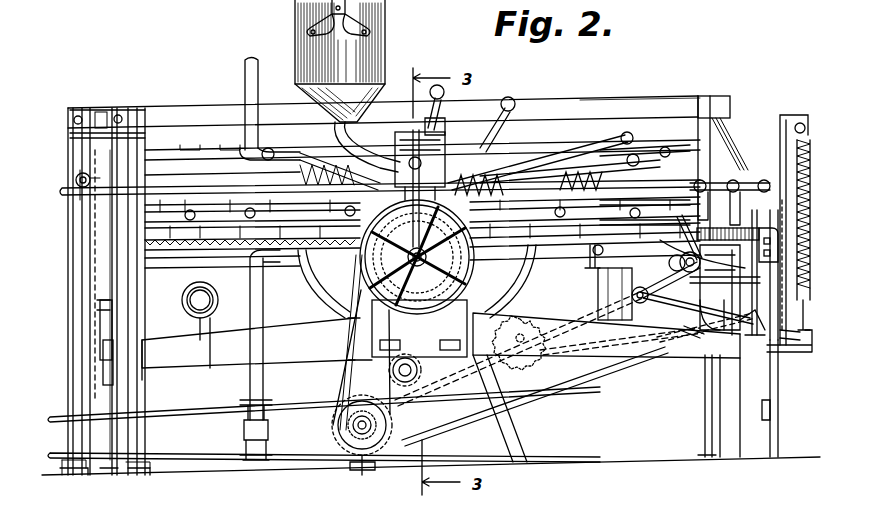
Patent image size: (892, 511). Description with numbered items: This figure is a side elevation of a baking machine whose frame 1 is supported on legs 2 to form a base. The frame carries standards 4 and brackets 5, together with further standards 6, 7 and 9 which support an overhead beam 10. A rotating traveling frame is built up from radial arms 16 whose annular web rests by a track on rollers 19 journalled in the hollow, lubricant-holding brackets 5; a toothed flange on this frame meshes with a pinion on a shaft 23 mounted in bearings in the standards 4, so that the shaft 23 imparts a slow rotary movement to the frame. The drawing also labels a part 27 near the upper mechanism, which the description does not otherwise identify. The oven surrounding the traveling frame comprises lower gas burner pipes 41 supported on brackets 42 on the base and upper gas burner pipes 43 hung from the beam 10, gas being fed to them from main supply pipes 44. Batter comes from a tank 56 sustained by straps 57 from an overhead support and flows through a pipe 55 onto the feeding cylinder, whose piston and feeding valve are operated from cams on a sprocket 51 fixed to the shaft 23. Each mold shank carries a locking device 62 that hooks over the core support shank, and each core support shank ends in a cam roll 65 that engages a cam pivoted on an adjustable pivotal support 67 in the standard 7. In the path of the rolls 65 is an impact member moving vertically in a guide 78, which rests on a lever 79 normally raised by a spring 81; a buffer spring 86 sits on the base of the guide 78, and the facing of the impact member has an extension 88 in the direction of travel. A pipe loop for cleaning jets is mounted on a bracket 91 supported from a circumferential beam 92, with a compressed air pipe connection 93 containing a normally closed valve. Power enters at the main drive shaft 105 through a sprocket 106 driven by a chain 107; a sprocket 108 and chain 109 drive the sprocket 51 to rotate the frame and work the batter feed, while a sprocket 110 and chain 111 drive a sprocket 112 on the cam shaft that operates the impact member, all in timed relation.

The frame 1 is at (200, 360).
The legs 2 is at (68, 390).
The standards 4 is at (475, 314).
The brackets 5 is at (198, 322).
The standard 6 is at (140, 430).
The standard 7 is at (76, 295).
The standard 9 is at (708, 98).
The beam 10 is at (598, 98).
The radial arms 16 is at (520, 262).
The rollers 19 is at (615, 260).
The shaft 23 is at (470, 256).
The spring rod 27 is at (520, 140).
The lower gas burner pipes 41 is at (176, 272).
The brackets 42 is at (100, 334).
The upper gas burner pipes 43 is at (165, 157).
The main supply pipes 44 is at (245, 75).
The sprocket 51 is at (350, 302).
The pipe 55 is at (312, 118).
The tank 56 is at (390, 45).
The straps 57 is at (318, 12).
The locking device 62 is at (300, 248).
The cam roll 65 is at (650, 155).
The pivotal support 67 is at (78, 176).
The guide 78 is at (748, 330).
The lever 79 is at (812, 355).
The spring 81 is at (780, 125).
The buffer spring 86 is at (800, 352).
The extension 88 is at (780, 170).
The bracket 91 is at (628, 165).
The beam 92 is at (597, 254).
The compressed air pipe connection 93 is at (688, 335).
The main drive shaft 105 is at (360, 470).
The sprocket 106 is at (270, 392).
The chain 107 is at (333, 425).
The sprocket 108 is at (345, 384).
The chain 109 is at (345, 340).
The sprocket 110 is at (485, 378).
The chain 111 is at (622, 378).
The sprocket 112 is at (676, 305).